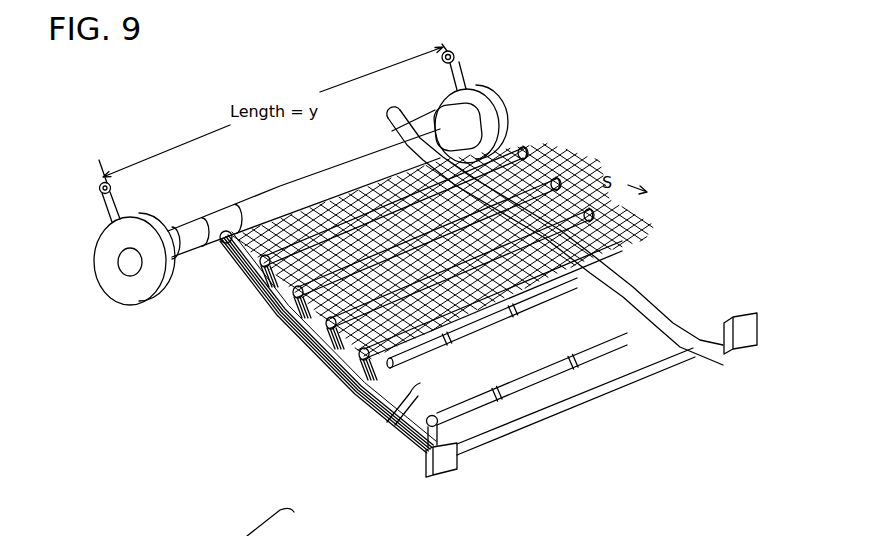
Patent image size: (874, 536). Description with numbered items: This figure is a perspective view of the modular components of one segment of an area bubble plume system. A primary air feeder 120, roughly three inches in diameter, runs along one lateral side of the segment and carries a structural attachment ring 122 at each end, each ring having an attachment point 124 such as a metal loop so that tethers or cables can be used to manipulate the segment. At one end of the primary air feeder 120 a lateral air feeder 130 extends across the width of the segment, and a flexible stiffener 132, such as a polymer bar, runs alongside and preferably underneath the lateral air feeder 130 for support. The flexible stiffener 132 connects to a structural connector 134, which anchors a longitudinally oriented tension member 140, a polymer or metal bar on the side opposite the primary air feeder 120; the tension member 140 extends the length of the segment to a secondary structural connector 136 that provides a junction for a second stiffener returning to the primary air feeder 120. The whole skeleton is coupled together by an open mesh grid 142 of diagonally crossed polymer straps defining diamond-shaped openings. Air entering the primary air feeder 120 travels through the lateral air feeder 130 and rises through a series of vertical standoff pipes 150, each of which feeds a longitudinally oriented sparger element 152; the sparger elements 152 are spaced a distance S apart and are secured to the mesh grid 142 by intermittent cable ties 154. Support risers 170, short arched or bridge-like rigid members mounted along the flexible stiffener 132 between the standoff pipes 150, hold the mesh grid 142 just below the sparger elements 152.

The primary air feeder 120 is at (262, 203).
The structural attachment rings 122 is at (105, 292).
The attachment point 124 is at (92, 183).
The lateral air feeder 130 is at (222, 245).
The flexible stiffener 132 is at (367, 400).
The structural connector 134 is at (457, 468).
The secondary structural connector 136 is at (740, 330).
The tension member 140 is at (613, 390).
The open mesh grid 142 is at (545, 168).
The standoff pipes 150 is at (305, 312).
The sparger element 152 is at (440, 280).
The cable ties 154 is at (515, 310).
The support risers 170 is at (330, 350).